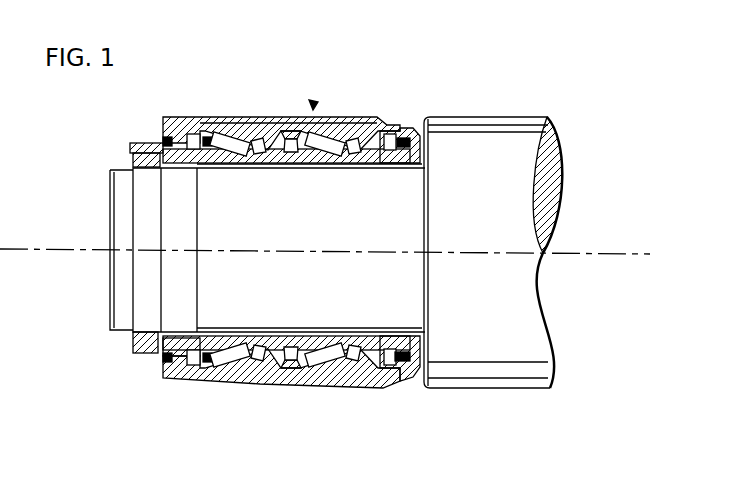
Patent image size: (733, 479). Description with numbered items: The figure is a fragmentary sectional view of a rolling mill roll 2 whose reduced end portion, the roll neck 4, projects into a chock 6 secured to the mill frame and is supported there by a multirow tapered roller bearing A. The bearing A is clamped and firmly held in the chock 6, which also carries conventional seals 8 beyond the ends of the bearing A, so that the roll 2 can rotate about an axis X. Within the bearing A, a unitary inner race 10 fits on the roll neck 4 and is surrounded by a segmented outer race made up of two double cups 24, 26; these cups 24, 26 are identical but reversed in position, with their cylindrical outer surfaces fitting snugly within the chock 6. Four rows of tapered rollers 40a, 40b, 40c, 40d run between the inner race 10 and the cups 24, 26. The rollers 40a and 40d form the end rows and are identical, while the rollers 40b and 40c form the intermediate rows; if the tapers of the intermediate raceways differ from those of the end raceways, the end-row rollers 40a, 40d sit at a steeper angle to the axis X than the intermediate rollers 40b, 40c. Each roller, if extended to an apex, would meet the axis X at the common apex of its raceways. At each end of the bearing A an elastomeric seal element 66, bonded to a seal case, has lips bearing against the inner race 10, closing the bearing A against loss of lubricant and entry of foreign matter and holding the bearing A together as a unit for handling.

The roll 2 is at (490, 213).
The roll neck 4 is at (316, 294).
The chock 6 is at (227, 117).
The seal 8 is at (163, 141).
The inner race 10 is at (298, 160).
The double cup 24 is at (247, 372).
The double cup 26 is at (325, 372).
The tapered rollers 40a is at (228, 160).
The tapered rollers 40b is at (267, 341).
The tapered rollers 40c is at (313, 341).
The tapered rollers 40d is at (355, 160).
The seal element 66 is at (201, 134).
The multirow tapered roller bearing A is at (314, 106).
The axis X is at (48, 250).